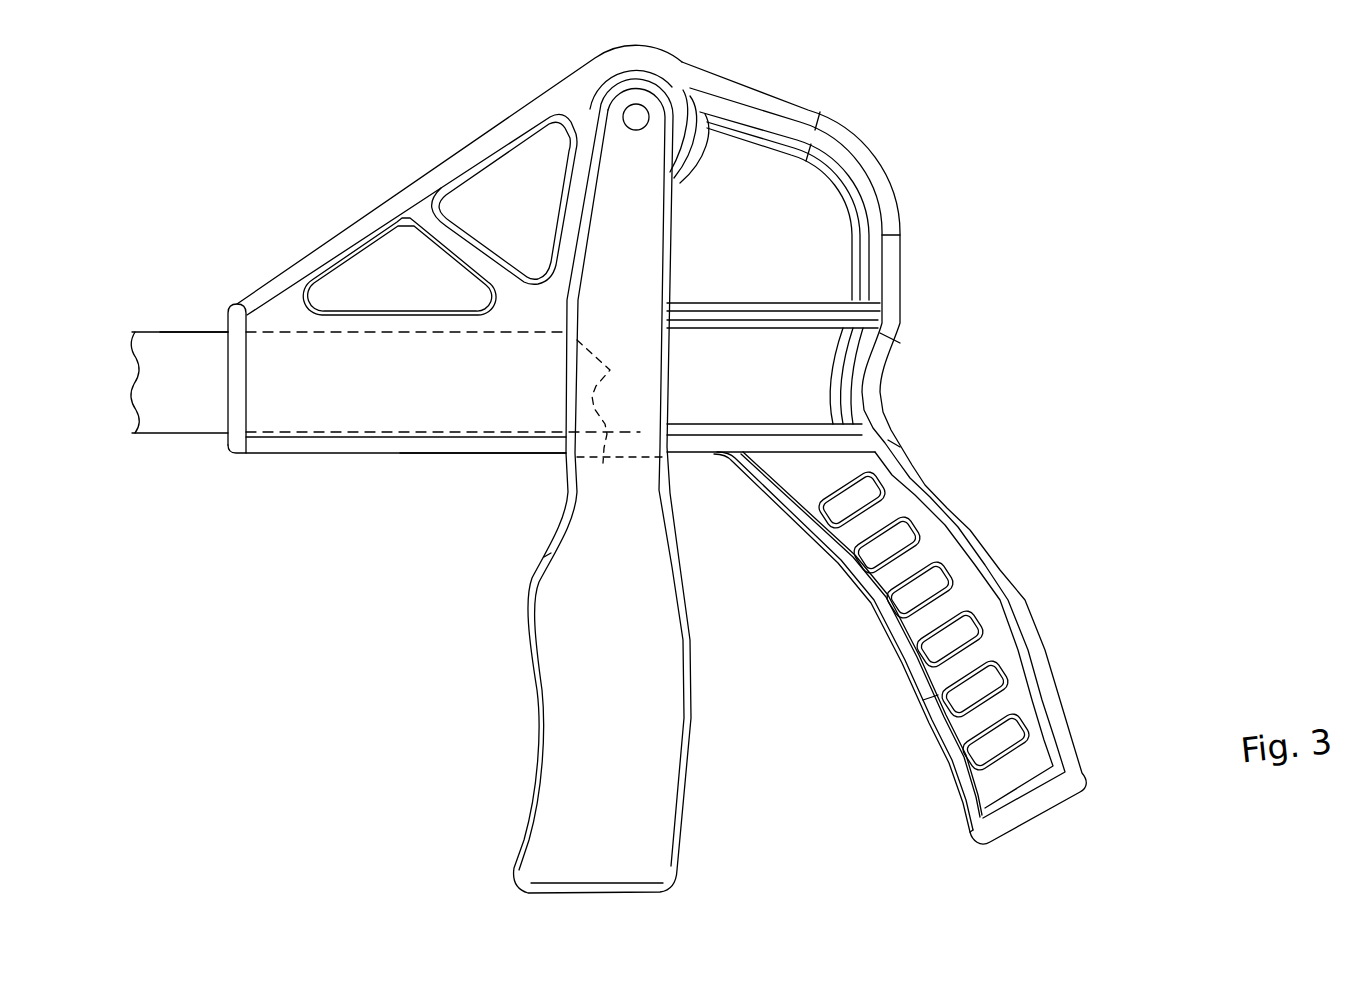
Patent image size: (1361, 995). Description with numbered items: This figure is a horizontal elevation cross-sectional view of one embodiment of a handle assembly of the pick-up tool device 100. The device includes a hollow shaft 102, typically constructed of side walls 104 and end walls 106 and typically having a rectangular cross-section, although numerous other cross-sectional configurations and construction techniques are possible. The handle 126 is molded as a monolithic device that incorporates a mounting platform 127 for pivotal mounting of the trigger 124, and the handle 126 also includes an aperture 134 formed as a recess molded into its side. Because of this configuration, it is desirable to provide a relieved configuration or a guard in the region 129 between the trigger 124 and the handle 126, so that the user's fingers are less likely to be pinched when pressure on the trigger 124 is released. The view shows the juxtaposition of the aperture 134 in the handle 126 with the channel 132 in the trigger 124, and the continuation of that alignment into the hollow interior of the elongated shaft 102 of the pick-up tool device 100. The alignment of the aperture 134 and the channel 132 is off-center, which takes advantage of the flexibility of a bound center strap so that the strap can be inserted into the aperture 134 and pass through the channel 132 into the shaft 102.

The pick-up tool device 100 is at (347, 197).
The hollow shaft 102 is at (152, 446).
The side walls 104 is at (197, 413).
The end walls 106 is at (183, 330).
The trigger 124 is at (693, 643).
The handle 126 is at (903, 222).
The mounting platform 127 is at (679, 88).
The region 129 is at (562, 460).
The channel 132 is at (670, 482).
The aperture 134 is at (797, 400).